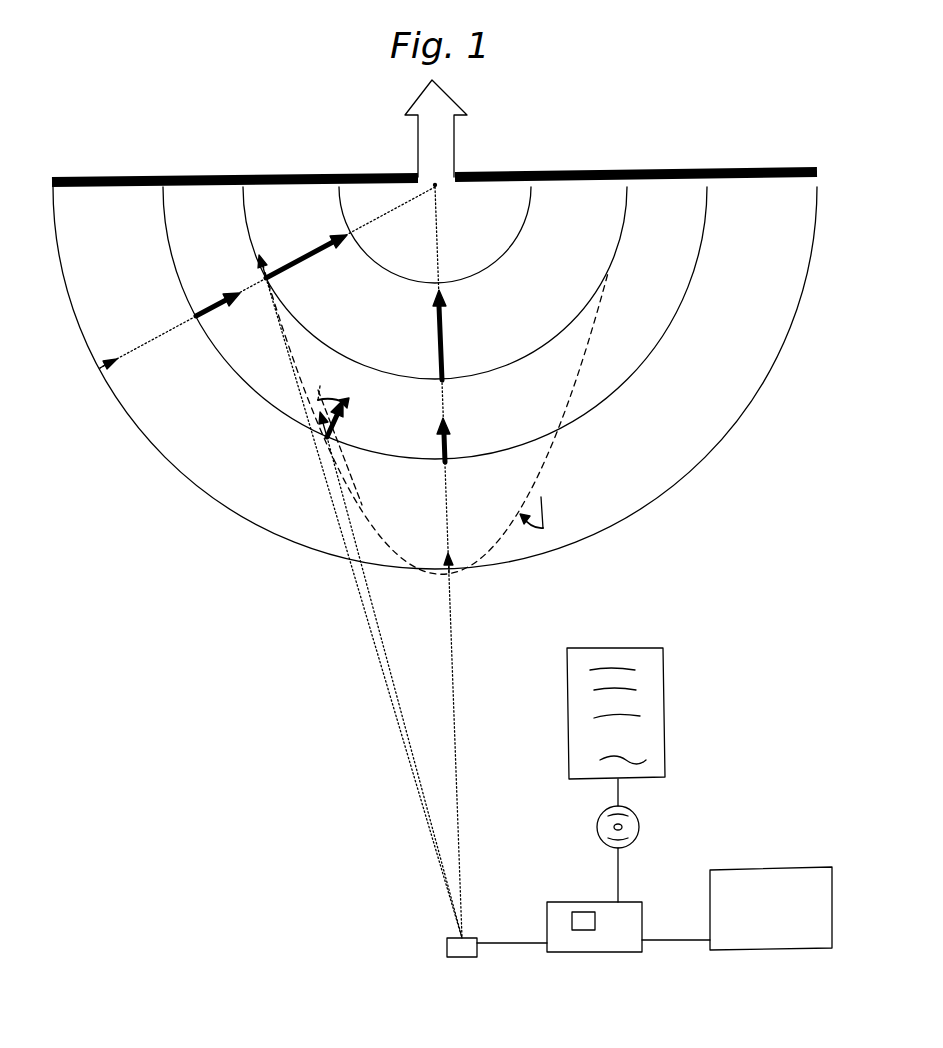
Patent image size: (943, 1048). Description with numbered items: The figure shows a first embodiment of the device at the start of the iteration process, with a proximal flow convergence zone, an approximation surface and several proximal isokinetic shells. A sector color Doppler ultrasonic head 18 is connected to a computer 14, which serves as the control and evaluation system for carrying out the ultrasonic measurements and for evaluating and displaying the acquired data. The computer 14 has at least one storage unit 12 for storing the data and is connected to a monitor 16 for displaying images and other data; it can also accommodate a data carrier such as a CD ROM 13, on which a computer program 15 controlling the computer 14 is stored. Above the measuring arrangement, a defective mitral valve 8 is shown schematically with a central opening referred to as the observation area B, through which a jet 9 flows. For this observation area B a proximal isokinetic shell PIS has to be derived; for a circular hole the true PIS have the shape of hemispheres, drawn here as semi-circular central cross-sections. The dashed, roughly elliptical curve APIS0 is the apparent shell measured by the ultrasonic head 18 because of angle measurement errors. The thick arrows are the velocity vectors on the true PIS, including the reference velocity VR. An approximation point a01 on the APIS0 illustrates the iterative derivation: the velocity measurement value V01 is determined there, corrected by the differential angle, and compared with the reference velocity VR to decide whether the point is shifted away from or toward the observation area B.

The defective mitral valve 8 is at (580, 168).
The jet 9 is at (455, 131).
The observation area B is at (430, 173).
The proximal isokinetic shell PIS is at (735, 428).
The apparent proximal isokinetic shell APIS0 is at (566, 447).
The reference velocity VR is at (452, 440).
The velocity measurement value V01 is at (327, 437).
The approximation point a01 is at (333, 447).
The storage unit 12 is at (574, 911).
The CD ROM 13 is at (597, 820).
The computer 14 is at (605, 954).
The computer program 15 is at (664, 666).
The monitor 16 is at (758, 950).
The sector color Doppler ultrasonic head 18 is at (468, 959).